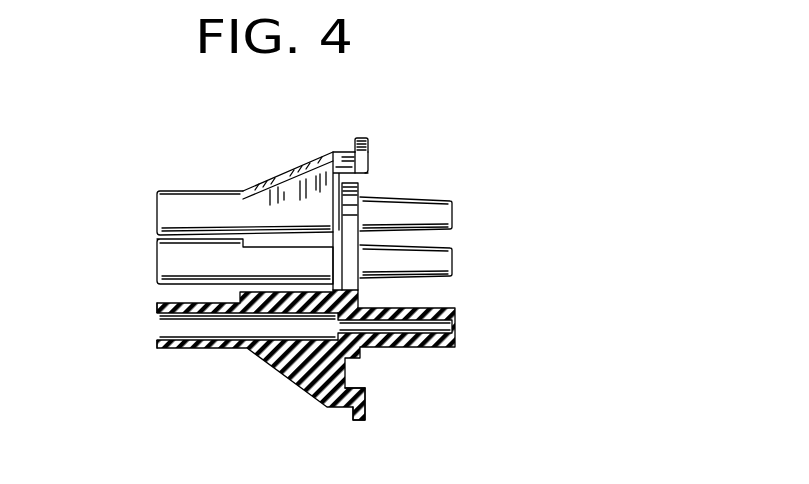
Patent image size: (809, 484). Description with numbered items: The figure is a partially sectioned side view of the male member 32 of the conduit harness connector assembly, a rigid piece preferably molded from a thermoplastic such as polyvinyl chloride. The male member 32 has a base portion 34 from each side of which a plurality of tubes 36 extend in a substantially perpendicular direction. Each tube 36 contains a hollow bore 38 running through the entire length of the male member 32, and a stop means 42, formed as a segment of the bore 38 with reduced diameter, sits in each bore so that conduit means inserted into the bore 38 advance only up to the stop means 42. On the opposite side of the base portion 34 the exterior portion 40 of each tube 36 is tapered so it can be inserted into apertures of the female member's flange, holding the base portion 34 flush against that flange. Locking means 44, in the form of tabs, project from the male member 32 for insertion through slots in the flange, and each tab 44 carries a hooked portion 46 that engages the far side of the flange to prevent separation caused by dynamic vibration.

The male member 32 is at (107, 287).
The base portion 34 is at (362, 188).
The tubes 36 is at (156, 212).
The hollow bore 38 is at (197, 328).
The tapered outer portion 40 is at (455, 215).
The stop means 42 is at (348, 349).
The locking means 44 is at (373, 160).
The hooked portion 46 is at (355, 143).